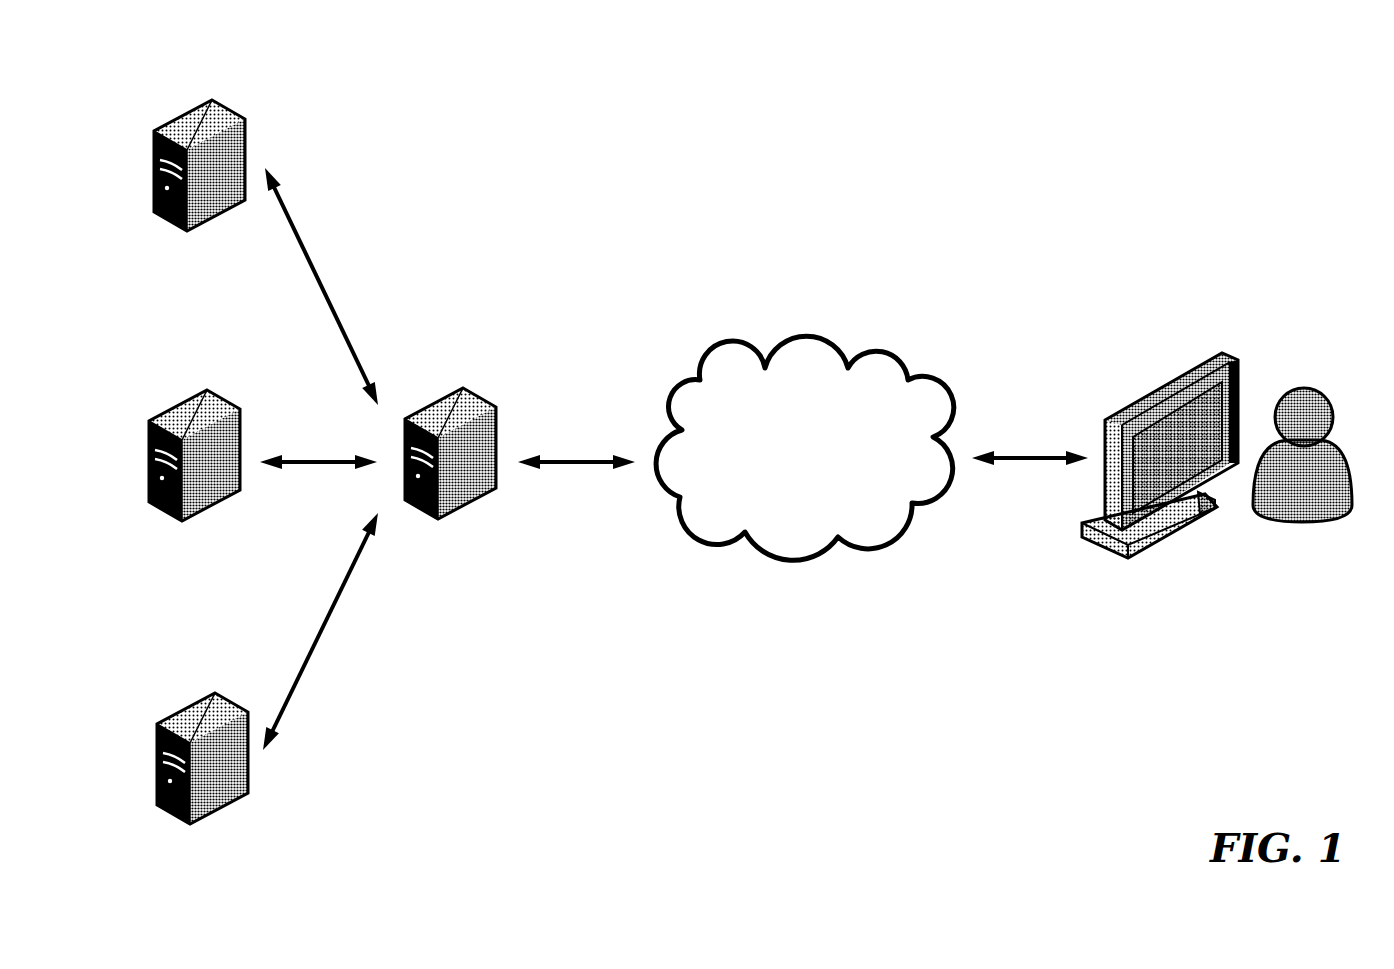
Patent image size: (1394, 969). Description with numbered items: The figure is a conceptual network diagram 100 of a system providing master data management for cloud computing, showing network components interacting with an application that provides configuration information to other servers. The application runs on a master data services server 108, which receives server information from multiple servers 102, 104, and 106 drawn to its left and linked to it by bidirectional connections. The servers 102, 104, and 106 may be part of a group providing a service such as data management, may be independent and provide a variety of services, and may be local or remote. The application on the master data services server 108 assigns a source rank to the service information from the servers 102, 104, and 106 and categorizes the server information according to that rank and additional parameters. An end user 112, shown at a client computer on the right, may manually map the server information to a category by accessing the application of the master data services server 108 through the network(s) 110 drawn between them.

The diagram 100 is at (1250, 97).
The server 102 is at (220, 83).
The server 104 is at (217, 377).
The server 106 is at (222, 680).
The master data services server 108 is at (470, 373).
The network(s) 110 is at (743, 328).
The end user 112 is at (1198, 333).